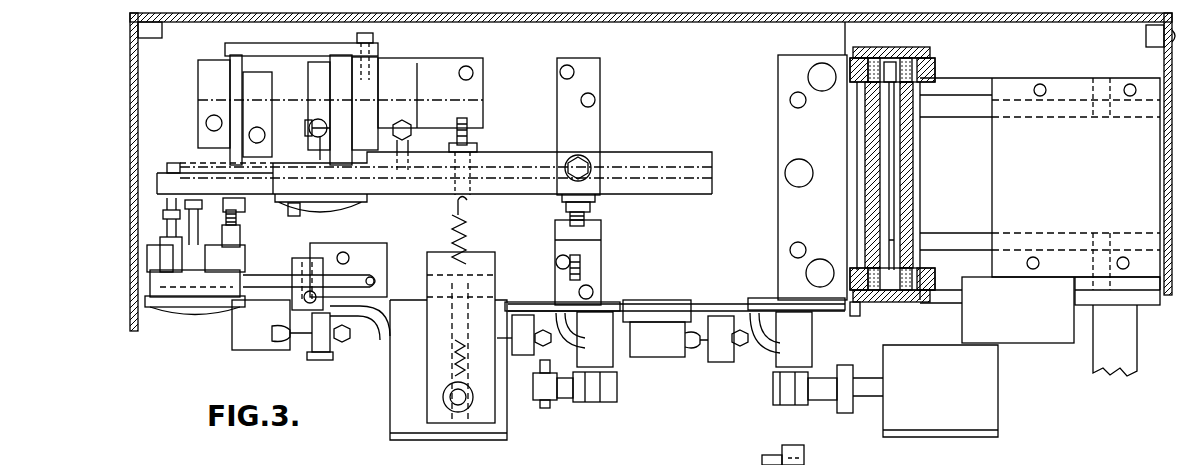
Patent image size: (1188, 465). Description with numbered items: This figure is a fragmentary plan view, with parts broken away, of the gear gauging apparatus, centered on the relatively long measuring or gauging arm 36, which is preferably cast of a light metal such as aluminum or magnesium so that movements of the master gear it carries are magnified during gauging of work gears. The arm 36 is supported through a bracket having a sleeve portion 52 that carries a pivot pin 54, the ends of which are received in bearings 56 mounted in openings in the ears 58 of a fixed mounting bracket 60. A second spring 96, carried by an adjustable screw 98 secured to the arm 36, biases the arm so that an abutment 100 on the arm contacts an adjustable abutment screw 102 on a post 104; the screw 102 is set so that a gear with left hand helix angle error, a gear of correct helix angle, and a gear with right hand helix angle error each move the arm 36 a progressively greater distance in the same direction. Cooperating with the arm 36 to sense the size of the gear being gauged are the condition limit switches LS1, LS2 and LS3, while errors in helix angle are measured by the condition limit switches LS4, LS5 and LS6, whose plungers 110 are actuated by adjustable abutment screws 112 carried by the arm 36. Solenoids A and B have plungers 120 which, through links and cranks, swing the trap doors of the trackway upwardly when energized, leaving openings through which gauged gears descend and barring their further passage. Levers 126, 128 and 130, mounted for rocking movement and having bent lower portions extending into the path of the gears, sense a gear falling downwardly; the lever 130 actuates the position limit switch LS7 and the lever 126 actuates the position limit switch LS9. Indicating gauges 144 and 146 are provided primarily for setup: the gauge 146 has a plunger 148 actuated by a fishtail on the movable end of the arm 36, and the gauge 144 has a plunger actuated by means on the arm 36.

The condition limit switch LS1 is at (198, 80).
The condition limit switch LS2 is at (262, 72).
The condition limit switch LS3 is at (330, 75).
The condition limit switch LS4 is at (165, 234).
The condition limit switch LS5 is at (262, 245).
The condition limit switch LS6 is at (322, 245).
The position limit switch LS7 is at (650, 347).
The position limit switch LS9 is at (232, 345).
The measuring arm 36 is at (641, 195).
The sleeve portion 52 is at (913, 170).
The pivot pin 54 is at (897, 204).
The bearing 56 is at (878, 56).
The ear 58 is at (932, 72).
The fixed mounting bracket 60 is at (778, 115).
The second spring 96 is at (470, 248).
The adjustable screw 98 is at (468, 120).
The abutment 100 is at (565, 206).
The adjustable abutment screw 102 is at (572, 225).
The post 104 is at (596, 242).
The plunger 110 is at (296, 214).
The adjustable abutment screw 112 is at (262, 200).
The plunger 120 is at (535, 400).
The lever 126 is at (362, 345).
The lever 128 is at (560, 306).
The lever 130 is at (760, 352).
The indicating gauge 144 is at (364, 200).
The indicating gauge 146 is at (180, 308).
The plunger 148 is at (160, 252).
The solenoid A is at (996, 414).
The solenoid B is at (390, 410).